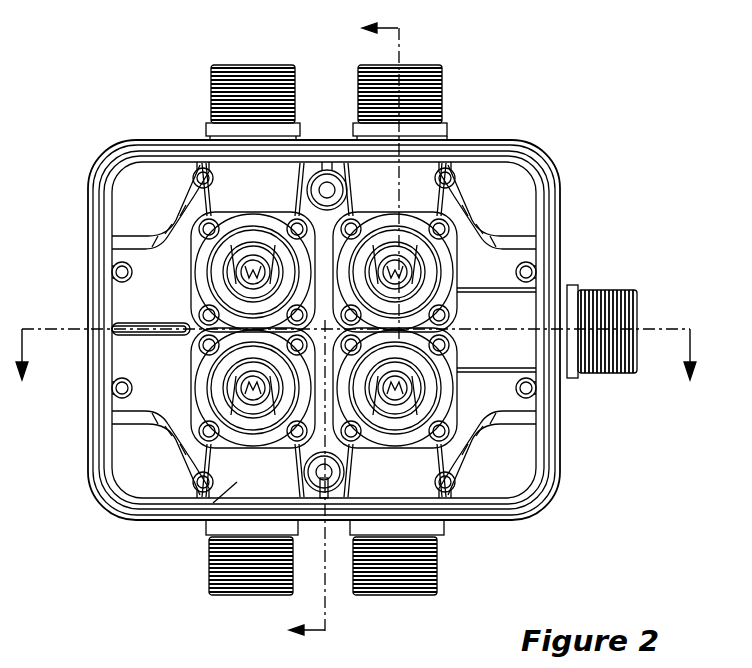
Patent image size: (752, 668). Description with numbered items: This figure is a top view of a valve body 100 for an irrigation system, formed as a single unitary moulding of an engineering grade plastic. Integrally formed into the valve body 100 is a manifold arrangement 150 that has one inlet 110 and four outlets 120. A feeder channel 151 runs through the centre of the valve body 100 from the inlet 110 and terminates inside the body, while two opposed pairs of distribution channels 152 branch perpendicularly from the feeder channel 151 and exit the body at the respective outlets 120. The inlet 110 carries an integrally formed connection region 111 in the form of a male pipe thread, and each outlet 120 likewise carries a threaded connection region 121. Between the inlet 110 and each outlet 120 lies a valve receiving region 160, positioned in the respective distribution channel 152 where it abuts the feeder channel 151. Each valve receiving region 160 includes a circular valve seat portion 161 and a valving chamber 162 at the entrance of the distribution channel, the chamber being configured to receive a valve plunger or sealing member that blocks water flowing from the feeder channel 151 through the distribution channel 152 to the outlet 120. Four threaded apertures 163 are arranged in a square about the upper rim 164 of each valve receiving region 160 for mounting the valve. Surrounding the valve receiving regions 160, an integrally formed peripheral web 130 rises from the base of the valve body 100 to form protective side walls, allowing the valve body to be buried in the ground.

The valve body 100 is at (579, 112).
The inlet 110 is at (642, 314).
The connection region 111 is at (598, 378).
The outlets 120 is at (256, 57).
The connection regions 121 is at (440, 565).
The peripheral web 130 is at (152, 143).
The manifold arrangement 150 is at (245, 186).
The feeder channel 151 is at (512, 317).
The distribution channels 152 is at (208, 520).
The valve receiving region 160 is at (178, 410).
The circular valve seat portion 161 is at (240, 390).
The valving chamber 162 is at (112, 496).
The threaded apertures 163 is at (133, 507).
The upper rim 164 is at (246, 384).